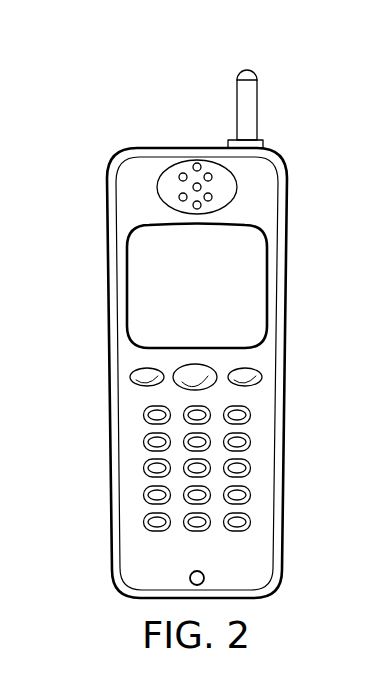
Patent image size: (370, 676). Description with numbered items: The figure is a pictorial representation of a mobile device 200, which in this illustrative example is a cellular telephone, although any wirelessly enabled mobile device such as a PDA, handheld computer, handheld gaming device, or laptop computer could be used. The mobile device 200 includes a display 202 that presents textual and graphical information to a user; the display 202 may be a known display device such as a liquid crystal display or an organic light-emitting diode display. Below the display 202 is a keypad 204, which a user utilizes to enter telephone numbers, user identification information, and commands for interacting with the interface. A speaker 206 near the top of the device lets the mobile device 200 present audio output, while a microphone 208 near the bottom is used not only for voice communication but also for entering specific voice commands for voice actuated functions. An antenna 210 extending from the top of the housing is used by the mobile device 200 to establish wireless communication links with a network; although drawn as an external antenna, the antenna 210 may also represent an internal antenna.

The mobile device 200 is at (119, 152).
The display 202 is at (217, 303).
The keypad 204 is at (100, 370).
The speaker 206 is at (173, 165).
The microphone 208 is at (190, 576).
The antenna 210 is at (258, 113).